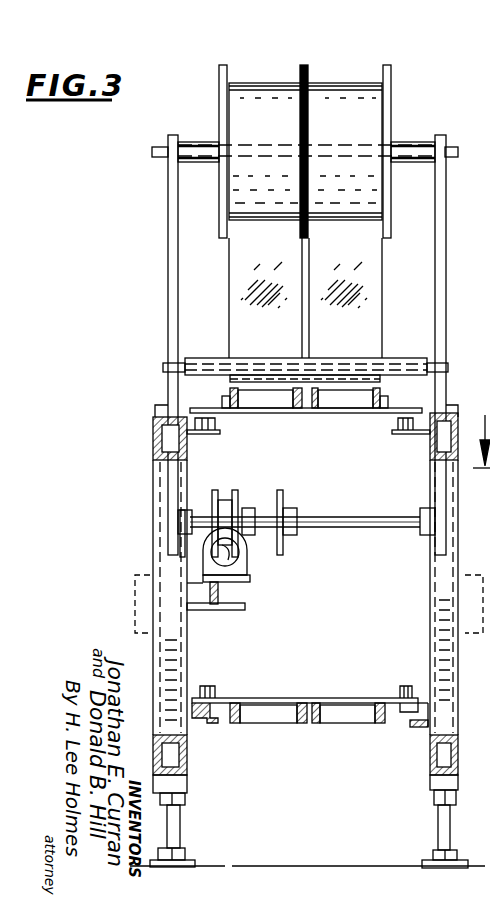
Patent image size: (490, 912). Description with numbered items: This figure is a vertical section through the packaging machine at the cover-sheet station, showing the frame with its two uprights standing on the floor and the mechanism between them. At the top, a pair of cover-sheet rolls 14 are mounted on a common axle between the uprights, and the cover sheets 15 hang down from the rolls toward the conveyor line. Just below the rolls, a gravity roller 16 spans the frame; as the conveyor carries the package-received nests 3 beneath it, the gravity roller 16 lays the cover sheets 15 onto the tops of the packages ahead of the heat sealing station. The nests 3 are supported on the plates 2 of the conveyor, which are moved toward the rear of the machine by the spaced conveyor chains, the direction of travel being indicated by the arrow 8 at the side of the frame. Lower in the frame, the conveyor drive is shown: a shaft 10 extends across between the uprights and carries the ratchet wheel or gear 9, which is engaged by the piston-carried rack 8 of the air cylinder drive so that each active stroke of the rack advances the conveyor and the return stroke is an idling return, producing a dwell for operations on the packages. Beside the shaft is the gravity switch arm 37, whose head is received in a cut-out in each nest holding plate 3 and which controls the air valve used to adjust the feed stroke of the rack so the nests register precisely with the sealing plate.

The plates 2 is at (230, 680).
The nests 3 is at (276, 402).
The piston-carried rack 8 is at (481, 457).
The ratchet wheel 9 is at (280, 508).
The shaft 10 is at (340, 512).
The cover-sheet rolls 14 is at (233, 119).
The cover sheets 15 is at (238, 300).
The gravity roller 16 is at (400, 366).
The gravity switch arm 37 is at (253, 560).